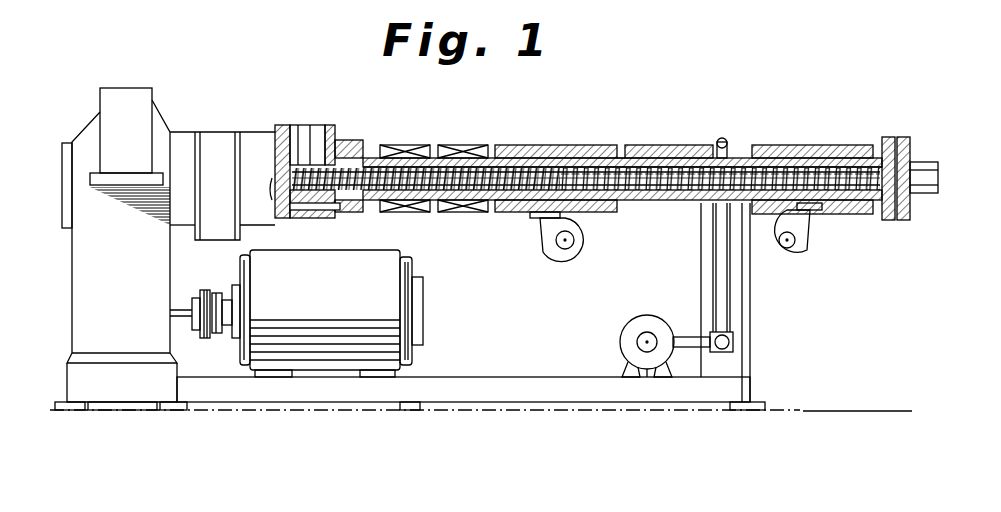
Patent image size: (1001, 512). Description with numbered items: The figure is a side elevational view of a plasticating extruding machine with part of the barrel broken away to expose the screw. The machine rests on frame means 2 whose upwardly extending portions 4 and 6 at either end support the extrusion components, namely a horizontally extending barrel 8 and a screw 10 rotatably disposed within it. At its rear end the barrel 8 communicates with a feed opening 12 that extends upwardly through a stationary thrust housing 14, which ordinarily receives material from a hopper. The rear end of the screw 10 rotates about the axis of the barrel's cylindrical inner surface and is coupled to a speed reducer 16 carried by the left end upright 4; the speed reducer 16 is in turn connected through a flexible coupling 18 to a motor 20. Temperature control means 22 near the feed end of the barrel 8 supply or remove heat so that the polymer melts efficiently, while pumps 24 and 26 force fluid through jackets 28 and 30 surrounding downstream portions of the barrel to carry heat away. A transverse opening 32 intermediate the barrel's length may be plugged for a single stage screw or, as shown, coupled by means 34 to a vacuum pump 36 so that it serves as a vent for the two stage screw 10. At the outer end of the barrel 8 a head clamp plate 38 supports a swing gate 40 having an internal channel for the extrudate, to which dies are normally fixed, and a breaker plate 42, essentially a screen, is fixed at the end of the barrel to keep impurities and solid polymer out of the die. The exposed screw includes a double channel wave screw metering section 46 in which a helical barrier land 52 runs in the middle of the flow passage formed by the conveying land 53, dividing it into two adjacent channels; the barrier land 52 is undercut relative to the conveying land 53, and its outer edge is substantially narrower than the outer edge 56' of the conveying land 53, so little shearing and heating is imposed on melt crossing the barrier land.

The frame means 2 is at (492, 372).
The upwardly extending portion 4 is at (80, 291).
The upwardly extending portion 6 is at (750, 344).
The barrel 8 is at (370, 147).
The screw 10 is at (460, 162).
The feed opening 12 is at (280, 127).
The stationary thrust housing 14 is at (312, 138).
The speed reducer 16 is at (112, 88).
The flexible coupling 18 is at (210, 340).
The motor 20 is at (322, 348).
The temperature control means 22 is at (442, 147).
The pump 24 is at (560, 262).
The pump 26 is at (807, 253).
The jacket 28 is at (600, 147).
The jacket 30 is at (786, 145).
The transverse opening 32 is at (725, 140).
The coupling means 34 is at (723, 282).
The vacuum pump 36 is at (648, 358).
The head clamp plate 38 is at (890, 145).
The swing gate 40 is at (912, 218).
The breaker plate 42 is at (877, 147).
The double channel wave screw metering section 46 is at (532, 190).
The helical barrier land 52 is at (632, 147).
The conveying land 53 is at (372, 182).
The outer edge of the conveying land 56' is at (590, 117).